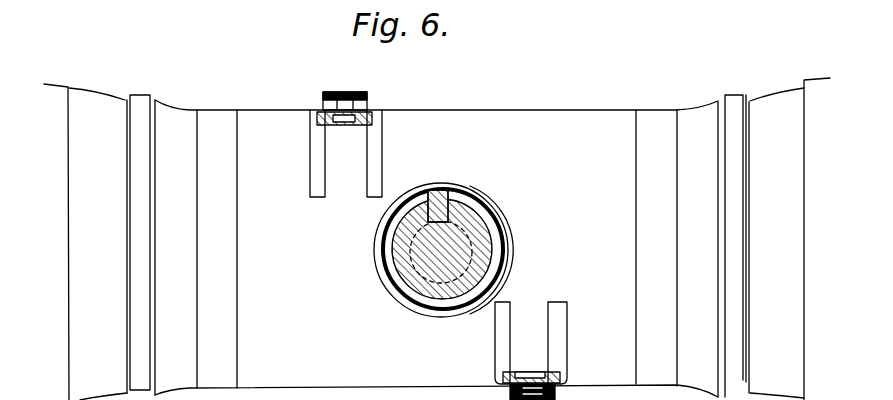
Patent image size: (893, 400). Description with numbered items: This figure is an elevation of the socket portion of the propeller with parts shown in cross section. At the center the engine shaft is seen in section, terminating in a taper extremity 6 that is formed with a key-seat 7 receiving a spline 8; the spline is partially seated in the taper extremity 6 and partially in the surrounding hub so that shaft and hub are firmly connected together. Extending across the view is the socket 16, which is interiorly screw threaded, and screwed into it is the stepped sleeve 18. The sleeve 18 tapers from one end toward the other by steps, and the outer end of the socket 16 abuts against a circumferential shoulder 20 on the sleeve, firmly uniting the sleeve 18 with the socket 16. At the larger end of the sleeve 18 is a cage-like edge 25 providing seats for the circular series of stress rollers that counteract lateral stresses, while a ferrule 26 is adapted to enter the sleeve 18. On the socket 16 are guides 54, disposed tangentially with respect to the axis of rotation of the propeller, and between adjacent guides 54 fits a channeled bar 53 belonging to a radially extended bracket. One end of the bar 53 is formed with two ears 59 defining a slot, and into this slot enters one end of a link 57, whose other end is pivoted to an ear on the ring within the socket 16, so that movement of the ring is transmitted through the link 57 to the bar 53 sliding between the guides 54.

The taper extremity 6 is at (478, 222).
The key-seat 7 is at (455, 200).
The spline 8 is at (438, 190).
The socket 16 is at (436, 248).
The stepped sleeve 18 is at (691, 97).
The circumferential shoulder 20 is at (238, 292).
The cage-like edge 25 is at (745, 93).
The ferrule 26 is at (437, 239).
The bar 53 is at (348, 122).
The guide 54 is at (317, 142).
The link 57 is at (345, 95).
The ear 59 is at (367, 99).